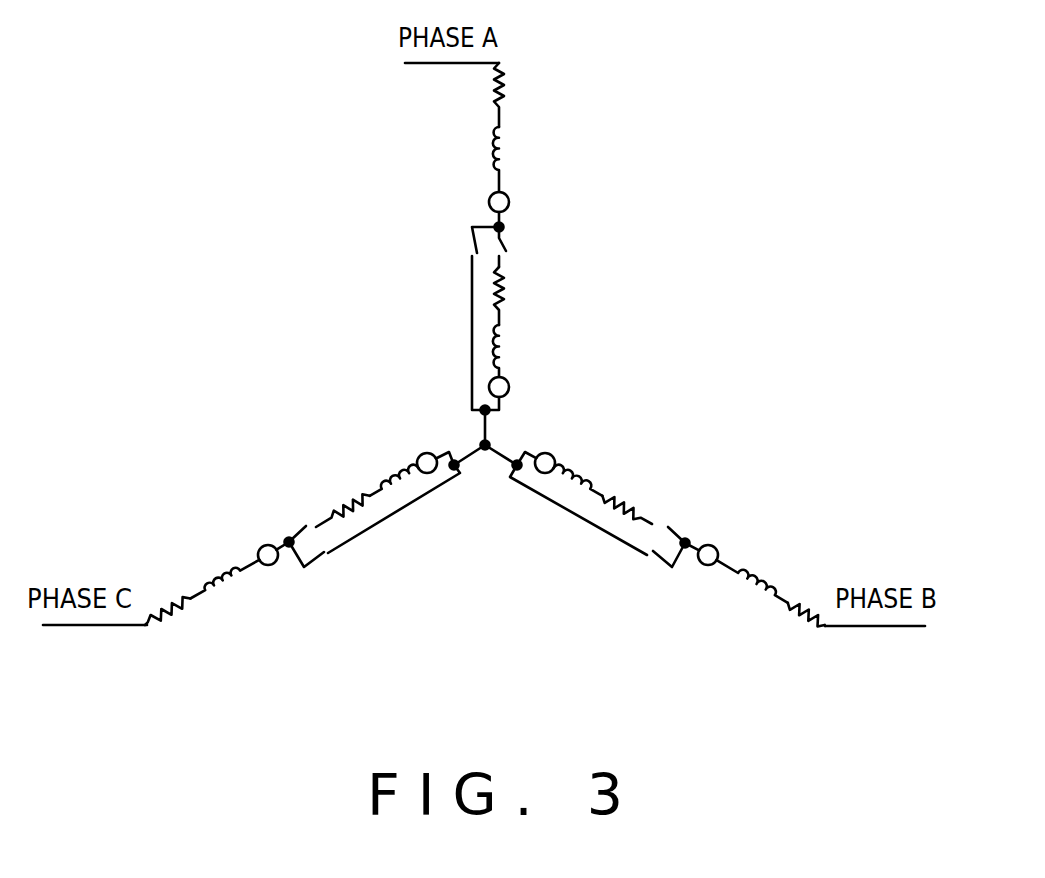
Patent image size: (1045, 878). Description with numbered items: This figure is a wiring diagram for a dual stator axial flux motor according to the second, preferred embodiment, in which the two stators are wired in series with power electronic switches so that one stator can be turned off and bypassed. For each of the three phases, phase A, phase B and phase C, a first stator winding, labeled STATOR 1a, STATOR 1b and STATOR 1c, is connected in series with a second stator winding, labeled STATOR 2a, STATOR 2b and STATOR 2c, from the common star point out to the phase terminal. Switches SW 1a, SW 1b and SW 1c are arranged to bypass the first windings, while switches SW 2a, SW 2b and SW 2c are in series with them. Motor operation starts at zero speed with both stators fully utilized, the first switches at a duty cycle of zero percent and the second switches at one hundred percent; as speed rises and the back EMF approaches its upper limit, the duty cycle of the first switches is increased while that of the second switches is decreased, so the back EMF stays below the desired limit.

The first stator winding and switch of phase A (STATOR 1a, SW 1a) 1a is at (517, 321).
The second stator winding and switch of phase A (STATOR 2a, SW 2a) 2a is at (478, 169).
The first stator winding and switch of phase B (STATOR 1b, SW 1b) 1b is at (608, 513).
The second stator winding and switch of phase B (STATOR 2b, SW 2b) 2b is at (738, 566).
The first stator winding and switch of phase C (STATOR 1c, SW 1c) 1c is at (371, 516).
The second stator winding and switch of phase C (STATOR 2c, SW 2c) 2c is at (230, 566).